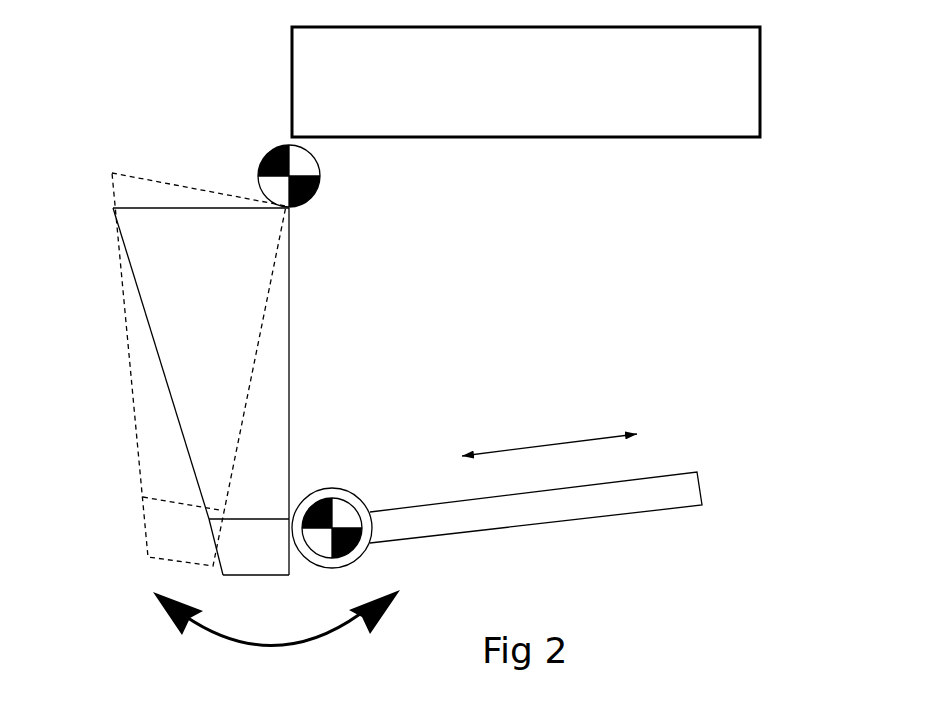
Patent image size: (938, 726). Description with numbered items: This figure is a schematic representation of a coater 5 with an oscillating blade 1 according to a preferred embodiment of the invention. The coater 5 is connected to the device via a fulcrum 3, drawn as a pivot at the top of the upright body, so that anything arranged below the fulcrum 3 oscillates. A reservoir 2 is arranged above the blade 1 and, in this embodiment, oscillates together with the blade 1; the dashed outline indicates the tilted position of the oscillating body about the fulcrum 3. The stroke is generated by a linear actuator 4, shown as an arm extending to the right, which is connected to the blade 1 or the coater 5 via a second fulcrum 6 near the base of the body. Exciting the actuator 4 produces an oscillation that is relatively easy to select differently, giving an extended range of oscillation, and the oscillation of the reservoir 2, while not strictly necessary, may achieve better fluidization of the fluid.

The blade 1 is at (240, 555).
The reservoir 2 is at (198, 423).
The fulcrum 3 is at (255, 167).
The linear actuator 4 is at (668, 492).
The coater 5 is at (144, 369).
The fulcrum 6 is at (342, 505).